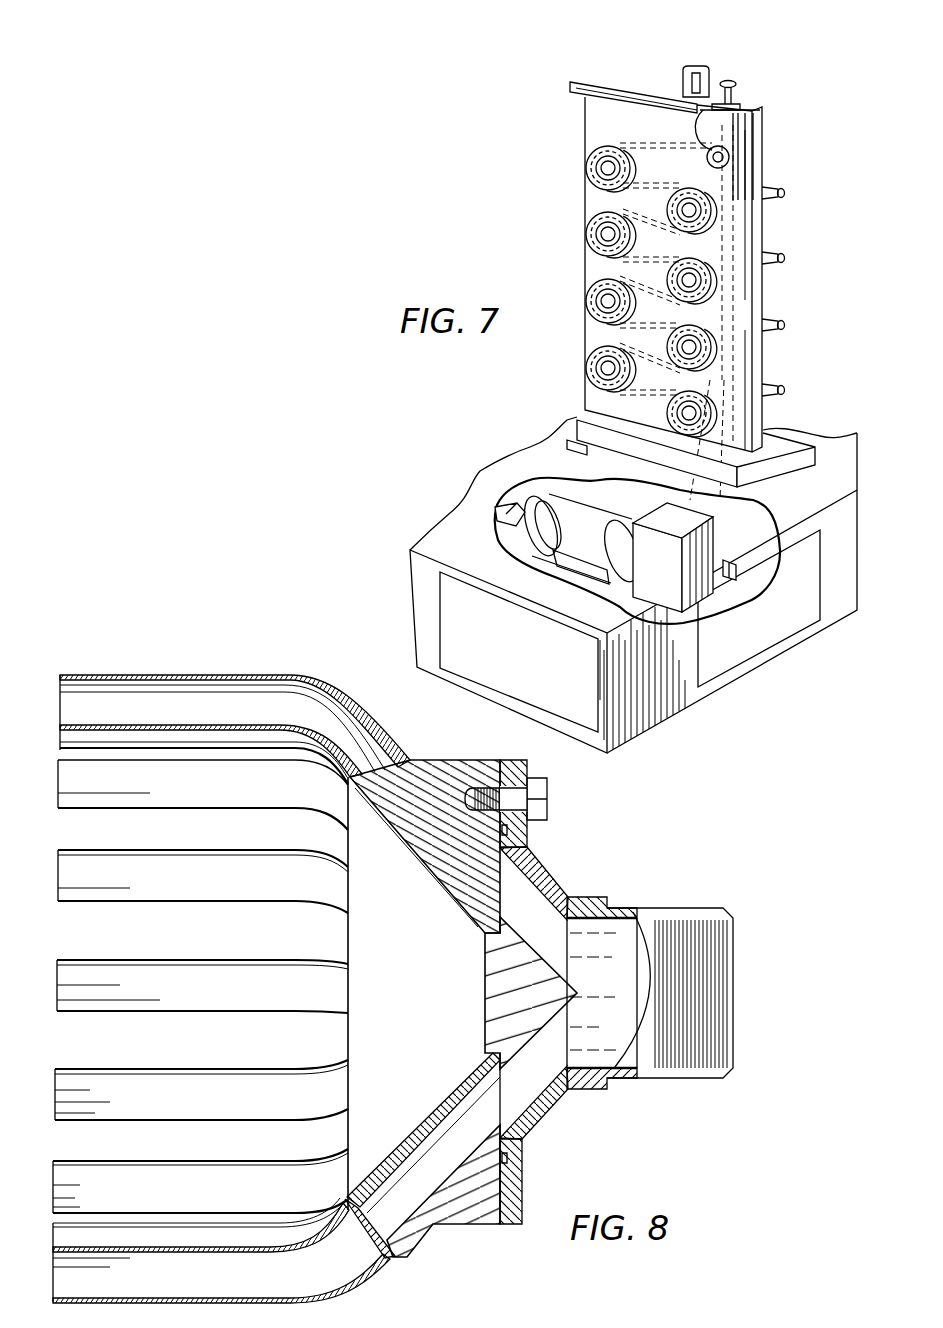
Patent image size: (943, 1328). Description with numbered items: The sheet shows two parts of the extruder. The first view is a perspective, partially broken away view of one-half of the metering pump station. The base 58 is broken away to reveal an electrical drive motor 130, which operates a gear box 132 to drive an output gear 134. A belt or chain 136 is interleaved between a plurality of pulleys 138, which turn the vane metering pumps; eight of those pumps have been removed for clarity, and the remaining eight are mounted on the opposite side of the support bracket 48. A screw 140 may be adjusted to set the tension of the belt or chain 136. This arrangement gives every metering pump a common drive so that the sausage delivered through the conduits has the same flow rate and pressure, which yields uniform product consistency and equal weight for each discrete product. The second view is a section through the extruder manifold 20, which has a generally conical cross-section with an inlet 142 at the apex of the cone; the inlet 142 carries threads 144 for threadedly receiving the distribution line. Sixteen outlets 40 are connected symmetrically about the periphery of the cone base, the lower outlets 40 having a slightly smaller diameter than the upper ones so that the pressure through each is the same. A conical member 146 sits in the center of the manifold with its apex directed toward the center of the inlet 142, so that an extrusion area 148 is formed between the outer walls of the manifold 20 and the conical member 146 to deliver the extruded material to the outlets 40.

In FIG. 7, the support bracket 48 is at (590, 85).
In FIG. 7, the screw 140 is at (733, 93).
In FIG. 7, the pulleys 138 is at (607, 233).
In FIG. 7, the belt or chain 136 is at (655, 143).
In FIG. 7, the base 58 is at (537, 665).
In FIG. 7, the electrical drive motor 130 is at (592, 536).
In FIG. 7, the gear box 132 is at (674, 564).
In FIG. 7, the output gear 134 is at (737, 578).
In FIG. 8, the extruder manifold 20 is at (447, 753).
In FIG. 8, the outlets 40 is at (324, 683).
In FIG. 8, the extrusion area 148 is at (528, 912).
In FIG. 8, the conical member 146 is at (527, 985).
In FIG. 8, the inlet 142 is at (607, 897).
In FIG. 8, the threads 144 is at (693, 1000).